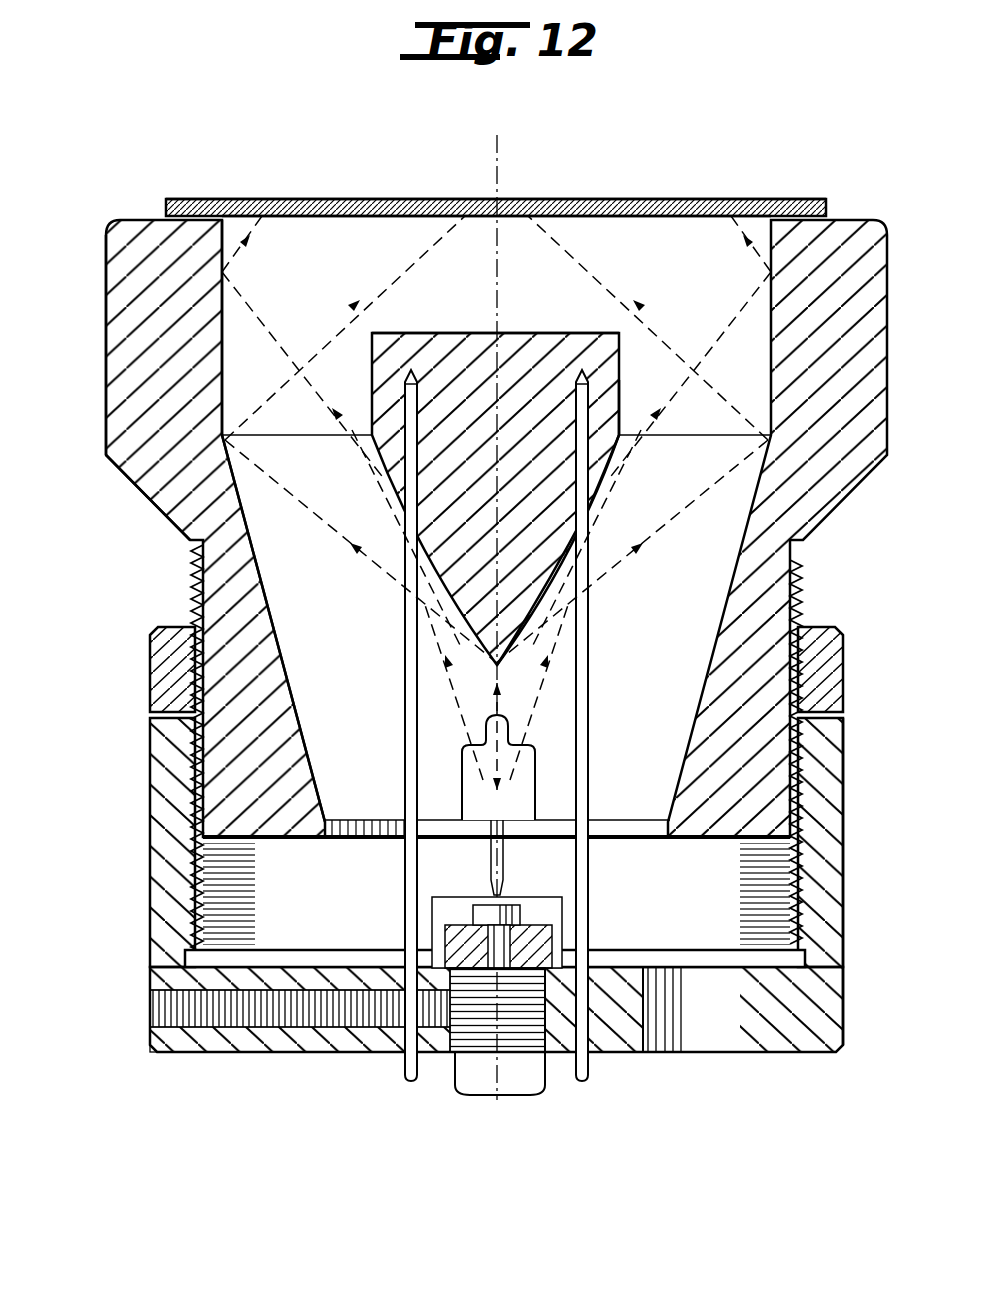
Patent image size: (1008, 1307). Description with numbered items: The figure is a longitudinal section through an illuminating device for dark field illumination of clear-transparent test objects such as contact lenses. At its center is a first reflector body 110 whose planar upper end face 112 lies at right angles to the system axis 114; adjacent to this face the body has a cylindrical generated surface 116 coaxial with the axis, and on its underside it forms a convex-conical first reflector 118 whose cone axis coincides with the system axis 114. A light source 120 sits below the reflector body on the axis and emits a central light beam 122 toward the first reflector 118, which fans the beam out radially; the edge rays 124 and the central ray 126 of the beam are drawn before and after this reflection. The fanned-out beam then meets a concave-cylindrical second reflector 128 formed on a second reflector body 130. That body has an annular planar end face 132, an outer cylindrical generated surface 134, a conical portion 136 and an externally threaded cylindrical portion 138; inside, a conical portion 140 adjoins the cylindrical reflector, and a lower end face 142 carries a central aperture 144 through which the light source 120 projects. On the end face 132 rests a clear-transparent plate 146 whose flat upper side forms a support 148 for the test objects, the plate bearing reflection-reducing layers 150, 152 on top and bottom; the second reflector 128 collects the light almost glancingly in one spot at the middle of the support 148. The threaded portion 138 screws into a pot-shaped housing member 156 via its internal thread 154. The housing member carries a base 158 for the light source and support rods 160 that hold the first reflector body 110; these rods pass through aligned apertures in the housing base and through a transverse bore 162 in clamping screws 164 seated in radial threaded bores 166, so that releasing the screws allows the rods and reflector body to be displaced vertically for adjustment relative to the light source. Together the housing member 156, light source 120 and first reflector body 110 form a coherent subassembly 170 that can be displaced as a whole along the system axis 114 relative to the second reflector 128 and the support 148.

The first reflector body 110 is at (420, 337).
The upper end face 112 is at (512, 332).
The system axis 114 is at (503, 152).
The cylindrical generated surface 116 is at (622, 408).
The convex-conical first reflector 118 is at (600, 510).
The light source 120 is at (534, 800).
The central light beam 122 is at (270, 457).
The edge rays 124 is at (266, 334).
The central ray 126 is at (322, 512).
The second reflector 128 is at (224, 340).
The second reflector body 130 is at (135, 230).
The annular end face 132 is at (845, 222).
The cylindrical generated surface 134 is at (105, 318).
The conical portion 136 is at (135, 490).
The cylindrical portion 138 is at (190, 596).
The conical portion 140 is at (302, 699).
The lower end face 142 is at (306, 840).
The central aperture 144 is at (630, 840).
The clear-transparent plate 146 is at (660, 199).
The support 148 is at (362, 199).
The reflection-reducing layer 150 is at (208, 199).
The reflection-reducing layer 152 is at (308, 218).
The internal thread 154 is at (800, 880).
The pot-shaped housing member 156 is at (822, 938).
The base 158 is at (447, 905).
The support rods 160 is at (403, 1078).
The transverse bore 162 is at (410, 977).
The clamping screws 164 is at (273, 988).
The radial threaded bores 166 is at (195, 1022).
The coherent subassembly 170 is at (864, 789).